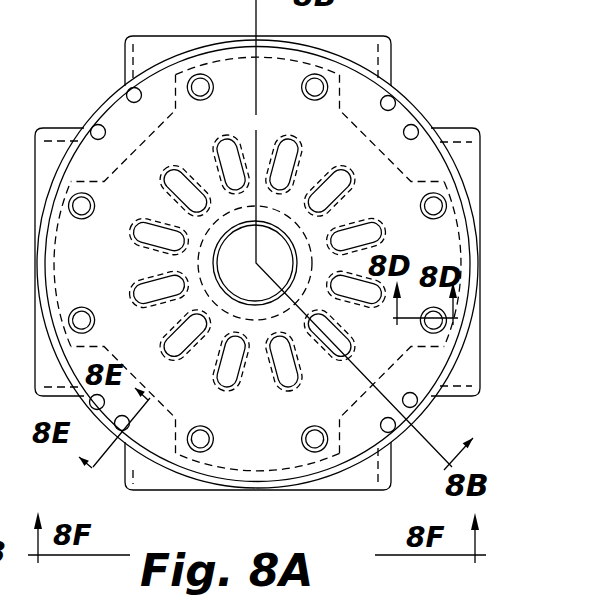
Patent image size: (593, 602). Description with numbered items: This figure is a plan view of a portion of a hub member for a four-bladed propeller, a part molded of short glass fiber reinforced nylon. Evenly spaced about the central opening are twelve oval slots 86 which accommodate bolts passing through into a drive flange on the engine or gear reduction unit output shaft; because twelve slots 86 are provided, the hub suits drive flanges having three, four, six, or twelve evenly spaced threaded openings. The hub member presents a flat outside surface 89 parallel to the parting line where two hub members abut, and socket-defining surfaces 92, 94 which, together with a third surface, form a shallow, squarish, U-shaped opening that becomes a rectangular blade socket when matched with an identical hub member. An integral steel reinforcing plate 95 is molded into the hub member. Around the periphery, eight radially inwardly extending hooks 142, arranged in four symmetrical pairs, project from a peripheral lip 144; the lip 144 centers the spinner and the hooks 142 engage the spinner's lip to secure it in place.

The oval slots 86 is at (226, 368).
The flat outside surface 89 is at (108, 265).
The socket-defining surface 92 is at (365, 490).
The socket-defining surface 94 is at (144, 490).
The reinforcing plate 95 is at (37, 352).
The hooks 142 is at (128, 90).
The peripheral lip 144 is at (394, 99).